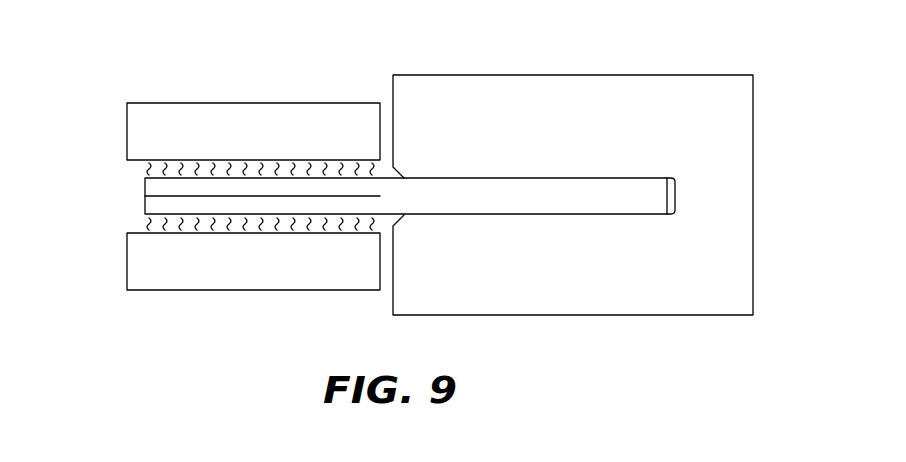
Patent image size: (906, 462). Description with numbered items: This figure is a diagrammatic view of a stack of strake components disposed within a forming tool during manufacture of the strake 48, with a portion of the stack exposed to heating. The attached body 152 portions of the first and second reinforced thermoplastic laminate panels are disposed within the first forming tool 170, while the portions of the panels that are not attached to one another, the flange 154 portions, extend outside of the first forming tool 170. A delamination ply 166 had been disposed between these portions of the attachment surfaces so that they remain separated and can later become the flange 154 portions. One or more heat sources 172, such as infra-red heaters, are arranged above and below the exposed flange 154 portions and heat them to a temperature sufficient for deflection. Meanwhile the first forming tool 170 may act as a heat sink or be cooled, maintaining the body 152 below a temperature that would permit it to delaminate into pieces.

The strake 48 is at (655, 177).
The body 152 is at (561, 196).
The flange 154 is at (157, 183).
The delamination ply 166 is at (145, 196).
The first forming tool 170 is at (618, 140).
The heat source 172 is at (172, 103).